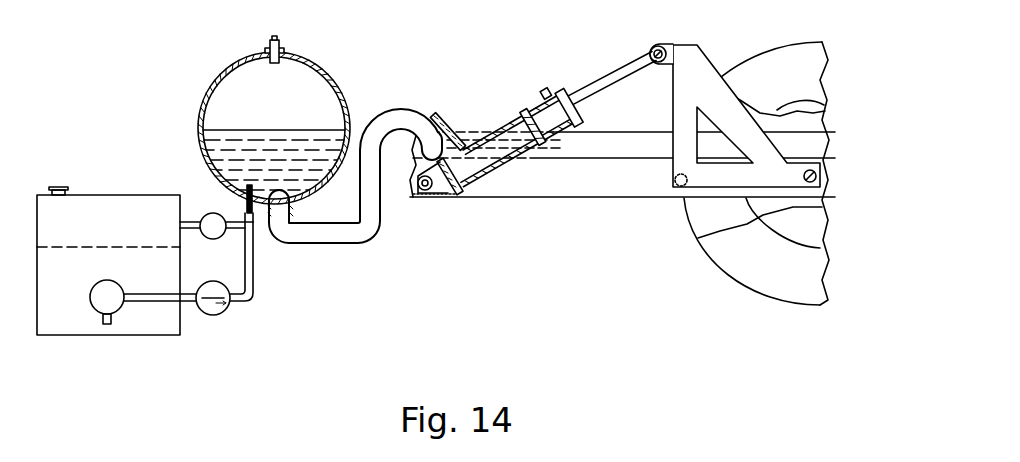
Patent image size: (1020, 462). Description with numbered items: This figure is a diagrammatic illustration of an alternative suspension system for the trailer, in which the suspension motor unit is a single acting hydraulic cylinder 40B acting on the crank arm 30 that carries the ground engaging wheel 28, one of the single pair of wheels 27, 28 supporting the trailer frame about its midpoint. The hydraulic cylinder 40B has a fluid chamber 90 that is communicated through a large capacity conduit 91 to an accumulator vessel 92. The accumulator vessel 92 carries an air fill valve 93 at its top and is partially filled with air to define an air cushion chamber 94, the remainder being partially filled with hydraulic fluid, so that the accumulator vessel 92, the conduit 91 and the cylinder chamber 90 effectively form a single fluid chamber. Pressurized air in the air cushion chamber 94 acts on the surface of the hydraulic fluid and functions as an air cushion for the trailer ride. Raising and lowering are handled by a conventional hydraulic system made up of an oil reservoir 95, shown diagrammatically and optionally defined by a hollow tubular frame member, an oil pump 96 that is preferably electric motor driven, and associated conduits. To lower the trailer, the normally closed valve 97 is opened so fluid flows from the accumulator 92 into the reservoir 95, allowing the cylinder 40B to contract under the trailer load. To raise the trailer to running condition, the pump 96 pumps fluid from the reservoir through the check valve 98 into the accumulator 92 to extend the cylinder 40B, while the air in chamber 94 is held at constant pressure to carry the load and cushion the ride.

The ground engaging wheel 27 is at (733, 265).
The ground engaging wheel 28 is at (698, 221).
The crank arm 30 is at (704, 49).
The single acting hydraulic cylinder 40B is at (497, 128).
The fluid chamber 90 is at (498, 158).
The large capacity conduit 91 is at (422, 92).
The accumulator vessel 92 is at (281, 118).
The air fill valve 93 is at (284, 52).
The air cushion chamber 94 is at (237, 97).
The oil reservoir 95 is at (110, 210).
The oil pump 96 is at (118, 312).
The normally closed valve 97 is at (216, 213).
The check valve 98 is at (228, 305).